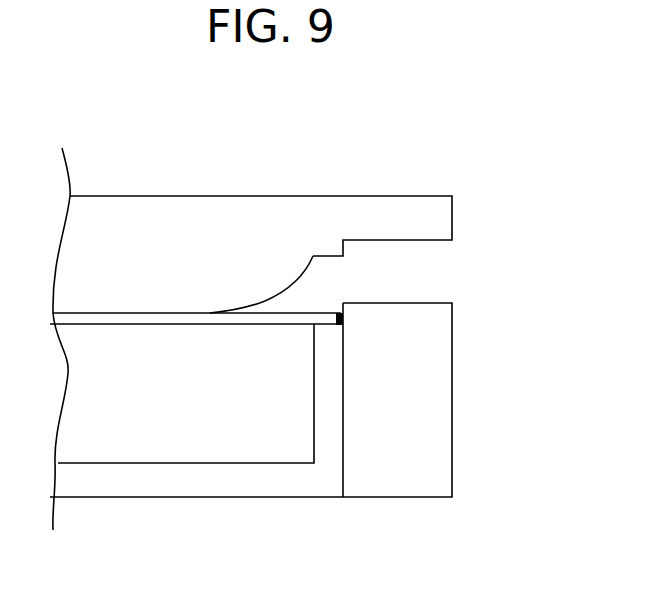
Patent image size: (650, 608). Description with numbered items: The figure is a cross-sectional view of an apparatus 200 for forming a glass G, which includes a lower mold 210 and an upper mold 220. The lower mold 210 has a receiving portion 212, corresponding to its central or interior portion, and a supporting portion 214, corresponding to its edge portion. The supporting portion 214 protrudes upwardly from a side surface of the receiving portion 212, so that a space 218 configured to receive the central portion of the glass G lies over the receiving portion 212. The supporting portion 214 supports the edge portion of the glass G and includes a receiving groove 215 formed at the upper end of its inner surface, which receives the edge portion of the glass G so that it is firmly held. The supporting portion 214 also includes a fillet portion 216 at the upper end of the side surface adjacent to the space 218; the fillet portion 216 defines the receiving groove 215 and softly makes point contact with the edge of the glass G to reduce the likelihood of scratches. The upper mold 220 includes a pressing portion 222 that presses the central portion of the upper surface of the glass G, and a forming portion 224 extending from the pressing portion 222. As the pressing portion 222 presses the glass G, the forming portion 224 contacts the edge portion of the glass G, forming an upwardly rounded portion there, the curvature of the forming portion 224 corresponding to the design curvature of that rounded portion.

The apparatus for forming a glass 200 is at (92, 148).
The upper mold 220 is at (399, 208).
The pressing portion 222 is at (188, 273).
The forming portion 224 is at (302, 273).
The receiving groove 215 is at (343, 318).
The lower mold 210 is at (251, 449).
The receiving portion 212 is at (148, 511).
The supporting portion 214 is at (381, 430).
The fillet portion 216 is at (316, 326).
The space 218 is at (162, 420).
The glass G is at (108, 317).